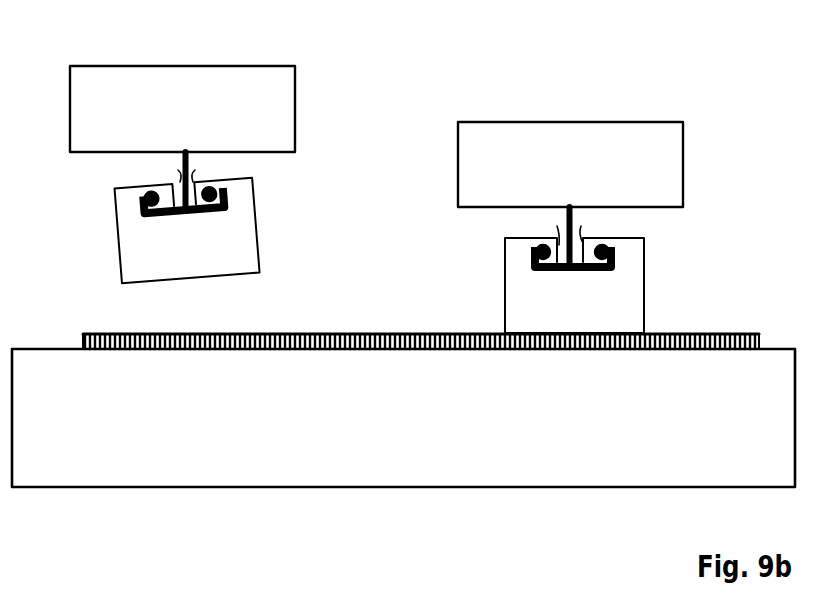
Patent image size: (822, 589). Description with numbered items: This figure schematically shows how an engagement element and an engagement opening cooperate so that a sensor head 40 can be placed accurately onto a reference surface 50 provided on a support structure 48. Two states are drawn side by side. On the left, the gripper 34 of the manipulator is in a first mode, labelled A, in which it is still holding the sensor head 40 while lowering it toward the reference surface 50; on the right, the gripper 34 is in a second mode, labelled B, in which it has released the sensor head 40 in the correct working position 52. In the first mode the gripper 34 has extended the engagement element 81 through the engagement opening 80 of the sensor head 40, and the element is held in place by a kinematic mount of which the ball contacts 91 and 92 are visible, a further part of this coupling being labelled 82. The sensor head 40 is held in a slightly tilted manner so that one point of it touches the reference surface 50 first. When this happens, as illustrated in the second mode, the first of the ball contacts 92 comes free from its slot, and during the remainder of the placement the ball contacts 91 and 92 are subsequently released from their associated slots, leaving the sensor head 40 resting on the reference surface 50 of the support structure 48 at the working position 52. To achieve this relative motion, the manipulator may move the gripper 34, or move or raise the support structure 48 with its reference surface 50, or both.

The gripper 34 is at (118, 80).
The sensor head 40 is at (137, 267).
The support structure 48 is at (781, 347).
The reference surface 50 is at (143, 334).
The working position 52 is at (199, 334).
The engagement opening 80 is at (146, 189).
The engagement element 81 is at (193, 180).
The hook 82 is at (178, 181).
The ball contact 91 is at (218, 196).
The ball contact 92 is at (145, 200).